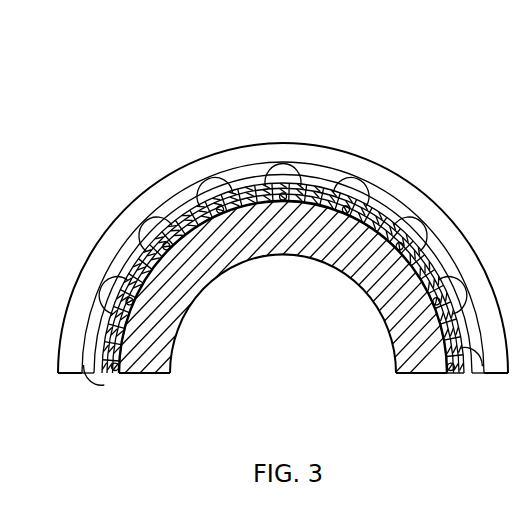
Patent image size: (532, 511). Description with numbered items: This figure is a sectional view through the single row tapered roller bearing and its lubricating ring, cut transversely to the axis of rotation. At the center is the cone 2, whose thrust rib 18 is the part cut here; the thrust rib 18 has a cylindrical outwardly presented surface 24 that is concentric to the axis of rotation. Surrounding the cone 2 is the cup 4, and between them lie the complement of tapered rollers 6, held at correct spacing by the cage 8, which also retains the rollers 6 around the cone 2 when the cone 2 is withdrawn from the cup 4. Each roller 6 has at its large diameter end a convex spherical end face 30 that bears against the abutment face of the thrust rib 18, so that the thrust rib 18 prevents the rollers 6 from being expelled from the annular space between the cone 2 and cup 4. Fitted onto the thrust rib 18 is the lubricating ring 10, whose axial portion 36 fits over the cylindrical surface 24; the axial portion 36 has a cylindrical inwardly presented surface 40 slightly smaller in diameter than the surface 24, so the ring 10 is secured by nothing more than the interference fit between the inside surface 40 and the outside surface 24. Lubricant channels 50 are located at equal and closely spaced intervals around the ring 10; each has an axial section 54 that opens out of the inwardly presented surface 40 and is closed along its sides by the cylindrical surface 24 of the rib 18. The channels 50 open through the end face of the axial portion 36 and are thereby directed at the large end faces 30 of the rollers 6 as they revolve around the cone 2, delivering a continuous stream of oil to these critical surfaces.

The cone 2 is at (176, 358).
The cup 4 is at (445, 196).
The tapered rollers 6 is at (278, 168).
The cage 8 is at (318, 180).
The lubricating ring 10 is at (434, 267).
The thrust rib 18 is at (153, 278).
The cylindrical outwardly presented surface 24 is at (197, 220).
The spherical end face 30 is at (146, 226).
The axial portion 36 is at (380, 226).
The cylindrical inwardly presented surface 40 is at (246, 206).
The lubricant channels 50 is at (428, 308).
The axial section 54 is at (402, 250).